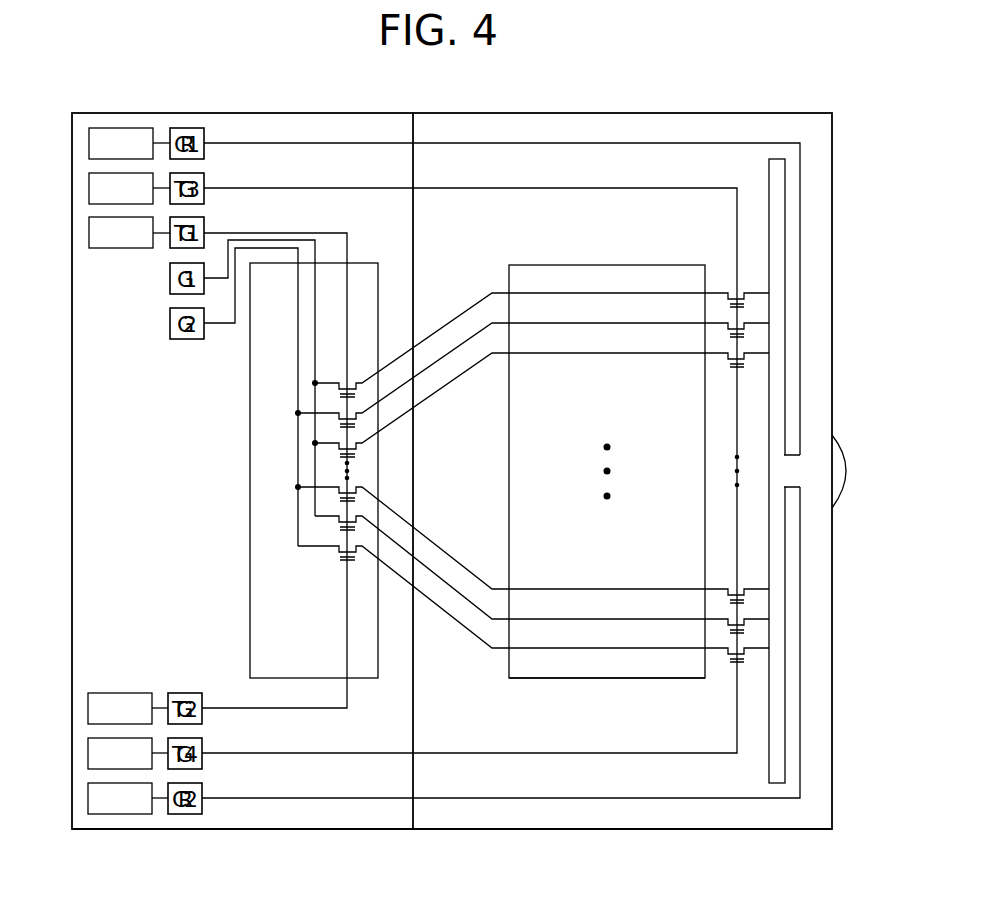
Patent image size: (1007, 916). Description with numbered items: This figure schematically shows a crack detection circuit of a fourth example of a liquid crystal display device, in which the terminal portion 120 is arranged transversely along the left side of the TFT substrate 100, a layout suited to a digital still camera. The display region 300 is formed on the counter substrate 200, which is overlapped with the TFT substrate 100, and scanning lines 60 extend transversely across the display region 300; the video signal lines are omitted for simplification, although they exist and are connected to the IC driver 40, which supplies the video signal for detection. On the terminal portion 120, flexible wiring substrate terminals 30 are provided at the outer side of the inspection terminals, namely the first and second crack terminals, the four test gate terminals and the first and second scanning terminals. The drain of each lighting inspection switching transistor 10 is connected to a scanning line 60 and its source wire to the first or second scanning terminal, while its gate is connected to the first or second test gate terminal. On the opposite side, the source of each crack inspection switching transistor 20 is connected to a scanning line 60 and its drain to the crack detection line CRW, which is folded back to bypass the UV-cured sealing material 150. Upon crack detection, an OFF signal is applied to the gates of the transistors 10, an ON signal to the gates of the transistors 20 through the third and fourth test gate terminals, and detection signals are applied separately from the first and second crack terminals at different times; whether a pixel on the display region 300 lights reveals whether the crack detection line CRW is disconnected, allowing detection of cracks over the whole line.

The lighting inspection switching transistor 10 is at (337, 553).
The crack inspection switching transistor 20 is at (728, 585).
The flexible wiring substrate terminals 30 is at (125, 248).
The IC driver 40 is at (250, 603).
The scanning line 60 is at (570, 678).
The TFT substrate 100 is at (365, 830).
The terminal portion 120 is at (283, 812).
The sealing material 150 is at (838, 505).
The counter substrate 200 is at (588, 829).
The display region 300 is at (705, 678).
The crack detection line CRW is at (802, 758).